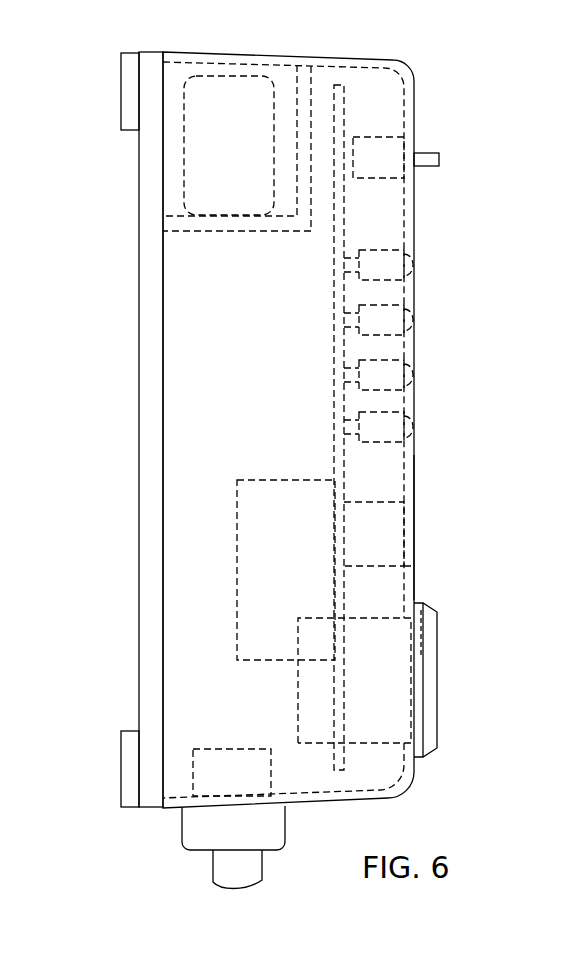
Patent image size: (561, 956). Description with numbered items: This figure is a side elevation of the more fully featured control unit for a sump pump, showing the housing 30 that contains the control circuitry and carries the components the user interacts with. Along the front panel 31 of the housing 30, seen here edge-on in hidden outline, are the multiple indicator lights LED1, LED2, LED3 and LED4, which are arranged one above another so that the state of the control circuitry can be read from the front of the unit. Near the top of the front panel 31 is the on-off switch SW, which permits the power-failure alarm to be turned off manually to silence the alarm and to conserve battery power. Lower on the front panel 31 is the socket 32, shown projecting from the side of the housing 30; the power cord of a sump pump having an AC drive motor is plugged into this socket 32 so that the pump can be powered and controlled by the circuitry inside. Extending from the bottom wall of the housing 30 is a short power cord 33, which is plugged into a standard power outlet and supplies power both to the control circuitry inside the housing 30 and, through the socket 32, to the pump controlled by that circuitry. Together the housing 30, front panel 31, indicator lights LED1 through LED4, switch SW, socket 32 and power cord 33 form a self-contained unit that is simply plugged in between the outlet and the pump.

The housing 30 is at (407, 108).
The on-off switch SW is at (432, 160).
The indicator light LED1 is at (414, 266).
The indicator light LED2 is at (414, 318).
The indicator light LED3 is at (414, 374).
The indicator light LED4 is at (414, 424).
The front panel 31 is at (415, 462).
The socket 32 is at (430, 705).
The power cord 33 is at (218, 869).